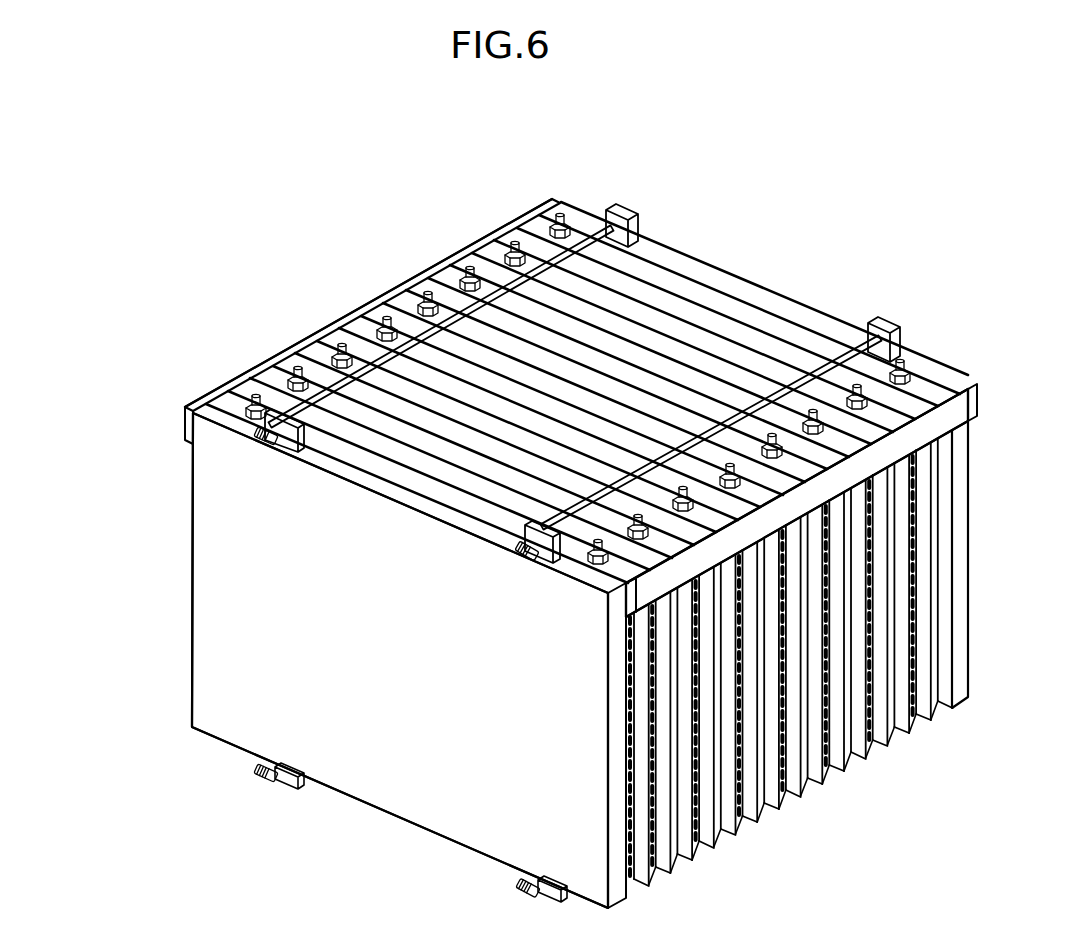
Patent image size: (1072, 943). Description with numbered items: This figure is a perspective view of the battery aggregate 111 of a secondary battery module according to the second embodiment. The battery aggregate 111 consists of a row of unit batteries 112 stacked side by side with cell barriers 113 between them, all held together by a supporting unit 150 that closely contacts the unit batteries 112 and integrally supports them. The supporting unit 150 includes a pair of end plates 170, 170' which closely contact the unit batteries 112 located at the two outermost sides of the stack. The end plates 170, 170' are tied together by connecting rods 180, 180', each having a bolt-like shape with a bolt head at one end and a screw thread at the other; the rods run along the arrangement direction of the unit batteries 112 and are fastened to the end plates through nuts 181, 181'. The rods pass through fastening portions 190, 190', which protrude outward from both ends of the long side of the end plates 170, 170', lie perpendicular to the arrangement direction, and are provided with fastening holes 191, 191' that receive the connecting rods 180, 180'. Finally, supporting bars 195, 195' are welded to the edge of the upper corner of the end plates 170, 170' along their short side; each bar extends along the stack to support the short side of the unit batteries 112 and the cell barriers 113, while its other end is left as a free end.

The battery aggregate 111 is at (287, 181).
The unit battery 112 is at (670, 862).
The cell barrier 113 is at (697, 846).
The supporting unit 150 is at (123, 530).
The end plate 170 is at (360, 660).
The end plate 170' is at (1001, 564).
The connecting rod 180 is at (430, 309).
The connecting rod 180' is at (726, 389).
The nut 181 is at (213, 571).
The nut 181' is at (545, 719).
The fastening portion 190 is at (482, 495).
The fastening portion 190' is at (717, 609).
The fastening hole 191 is at (626, 202).
The fastening hole 191' is at (886, 315).
The supporting bar 195 is at (339, 321).
The supporting bar 195' is at (843, 498).